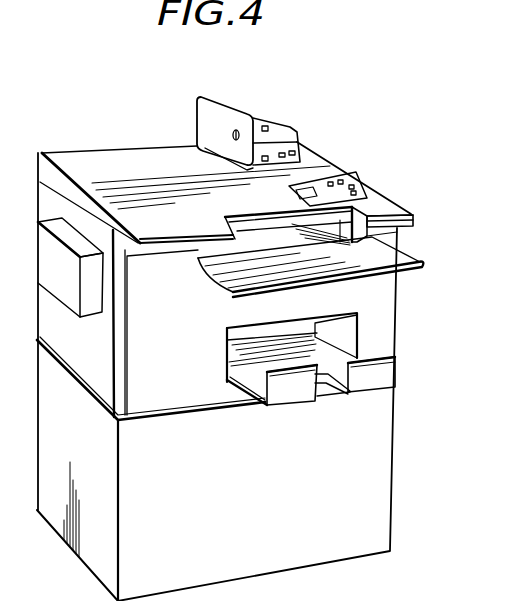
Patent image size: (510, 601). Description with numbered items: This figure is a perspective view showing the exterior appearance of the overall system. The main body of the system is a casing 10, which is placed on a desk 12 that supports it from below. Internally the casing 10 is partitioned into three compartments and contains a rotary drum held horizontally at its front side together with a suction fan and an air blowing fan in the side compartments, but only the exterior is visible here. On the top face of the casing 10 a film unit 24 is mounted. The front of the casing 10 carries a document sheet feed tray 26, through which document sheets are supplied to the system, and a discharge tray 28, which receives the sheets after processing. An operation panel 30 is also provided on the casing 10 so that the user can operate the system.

The casing 10 is at (398, 317).
The desk 12 is at (392, 497).
The film unit 24 is at (255, 108).
The document sheet feed tray 26 is at (425, 266).
The discharge tray 28 is at (383, 392).
The operation panel 30 is at (352, 178).